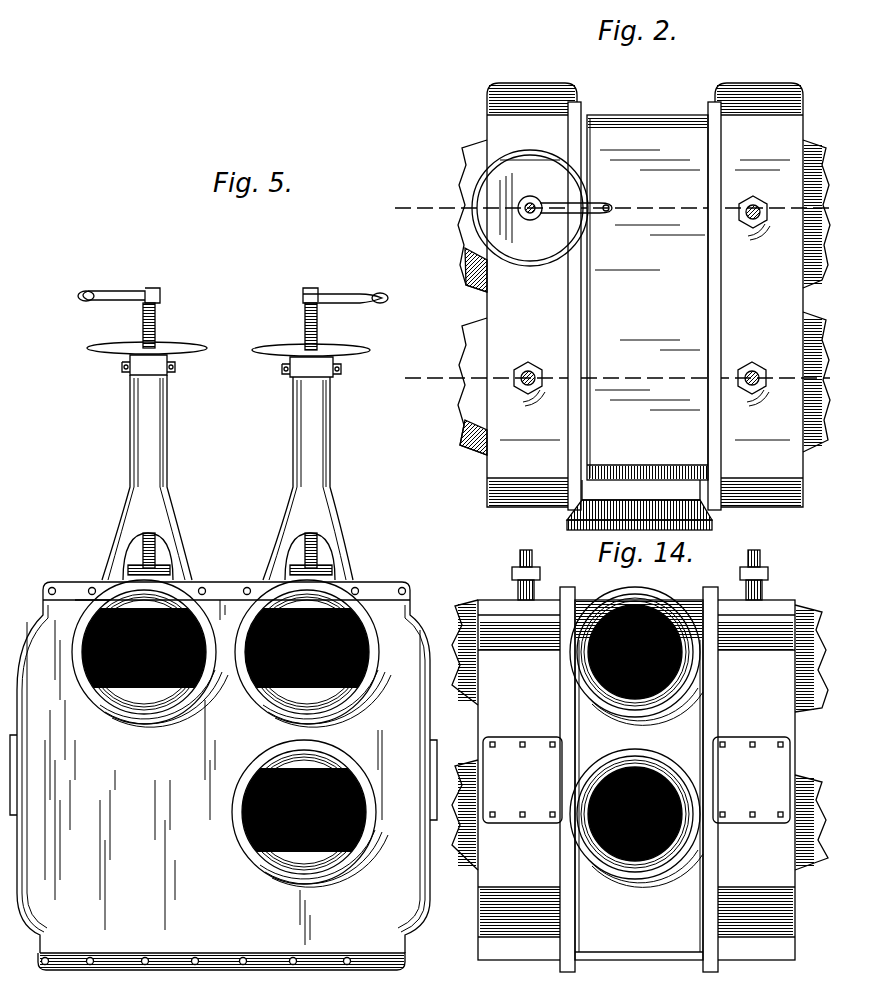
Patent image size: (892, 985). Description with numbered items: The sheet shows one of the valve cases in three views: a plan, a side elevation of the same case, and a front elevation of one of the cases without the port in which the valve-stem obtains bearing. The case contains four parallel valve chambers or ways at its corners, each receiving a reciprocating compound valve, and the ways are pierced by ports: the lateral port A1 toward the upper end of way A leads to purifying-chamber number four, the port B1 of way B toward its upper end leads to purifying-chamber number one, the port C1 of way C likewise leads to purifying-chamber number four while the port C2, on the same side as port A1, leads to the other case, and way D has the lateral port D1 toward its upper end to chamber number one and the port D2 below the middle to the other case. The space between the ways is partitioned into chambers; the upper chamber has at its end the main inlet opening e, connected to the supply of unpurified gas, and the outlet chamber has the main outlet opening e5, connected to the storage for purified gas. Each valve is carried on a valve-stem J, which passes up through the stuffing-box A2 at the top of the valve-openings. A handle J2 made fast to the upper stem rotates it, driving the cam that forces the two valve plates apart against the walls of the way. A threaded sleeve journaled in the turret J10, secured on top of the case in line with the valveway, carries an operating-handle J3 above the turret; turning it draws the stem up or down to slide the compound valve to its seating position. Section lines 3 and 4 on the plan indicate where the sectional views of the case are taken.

In FIG. 2, the valve-stem J is at (524, 217).
In FIG. 5, the valve-stem J is at (155, 322).
In FIG. 2, the handle J2 is at (560, 213).
In FIG. 5, the handle J2 is at (160, 270).
In FIG. 2, the operating-handle J3 is at (552, 183).
In FIG. 5, the operating-handle J3 is at (253, 348).
In FIG. 5, the turret J10 is at (300, 440).
In FIG. 2, the lateral port A1 is at (473, 168).
In FIG. 5, the lateral port A1 is at (112, 600).
In FIG. 2, the stuffing-box A2 is at (752, 228).
In FIG. 5, the stuffing-box A2 is at (170, 570).
In FIG. 2, the port B1 is at (812, 148).
In FIG. 2, the port C1 is at (470, 372).
In FIG. 5, the port C1 is at (345, 600).
In FIG. 14, the port C1 is at (465, 640).
In FIG. 5, the port C2 is at (315, 862).
In FIG. 14, the port C2 is at (459, 794).
In FIG. 2, the lateral port D1 is at (812, 452).
In FIG. 14, the lateral port D1 is at (800, 665).
In FIG. 14, the port D2 is at (800, 830).
In FIG. 2, the main inlet opening e is at (639, 505).
In FIG. 14, the main inlet opening e is at (618, 697).
In FIG. 14, the main outlet opening e5 is at (625, 873).
In FIG. 2, the section line 3 is at (440, 378).
In FIG. 2, the section line 4 is at (420, 208).